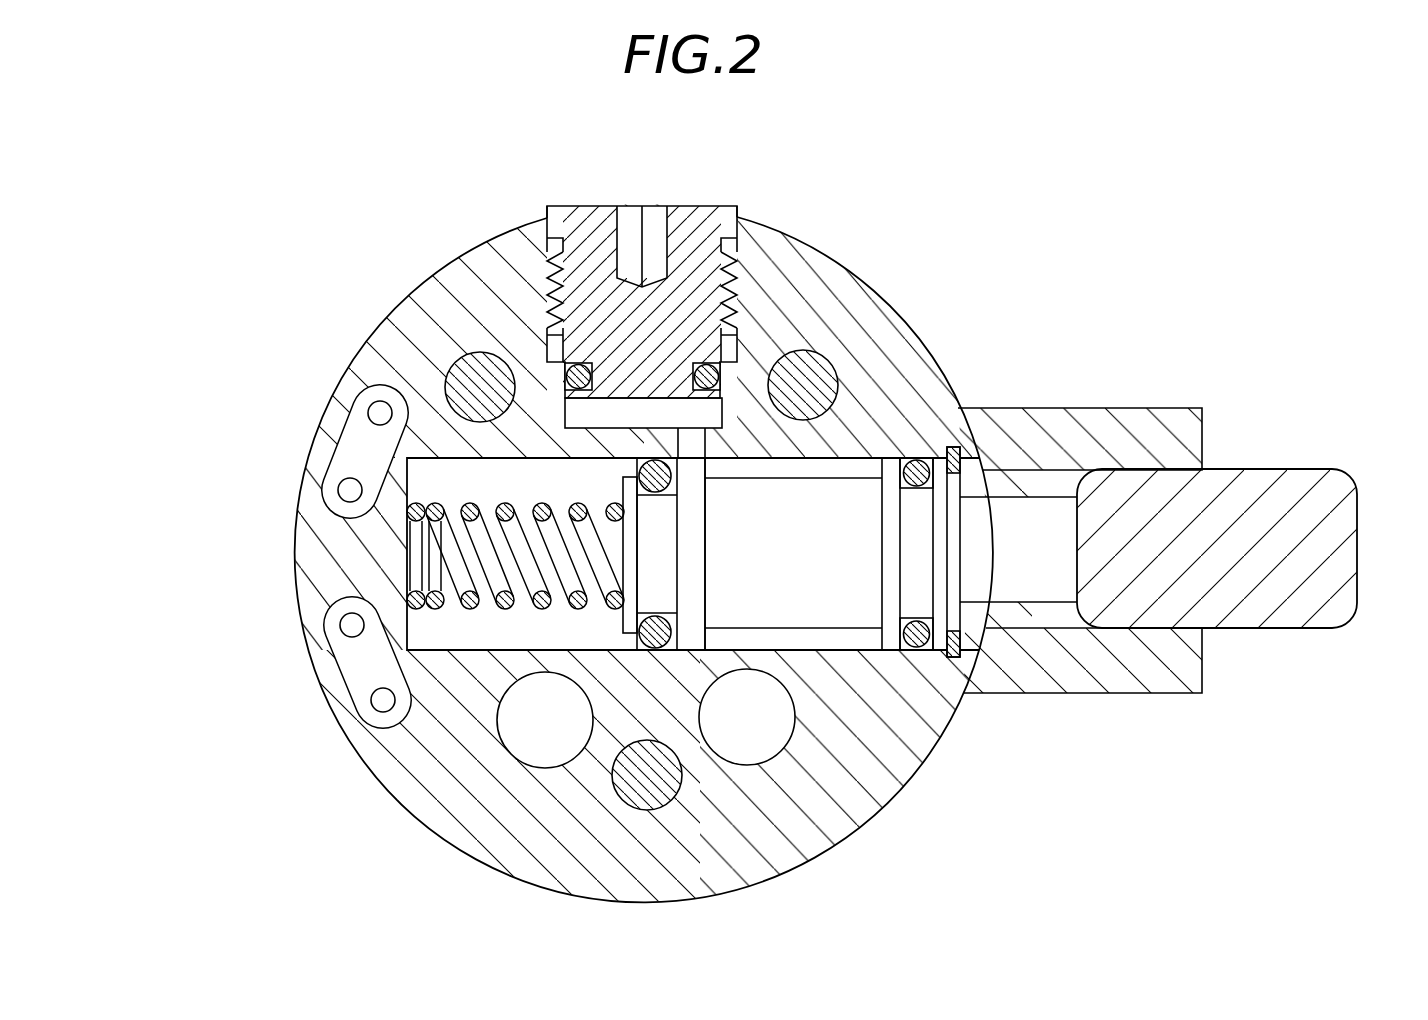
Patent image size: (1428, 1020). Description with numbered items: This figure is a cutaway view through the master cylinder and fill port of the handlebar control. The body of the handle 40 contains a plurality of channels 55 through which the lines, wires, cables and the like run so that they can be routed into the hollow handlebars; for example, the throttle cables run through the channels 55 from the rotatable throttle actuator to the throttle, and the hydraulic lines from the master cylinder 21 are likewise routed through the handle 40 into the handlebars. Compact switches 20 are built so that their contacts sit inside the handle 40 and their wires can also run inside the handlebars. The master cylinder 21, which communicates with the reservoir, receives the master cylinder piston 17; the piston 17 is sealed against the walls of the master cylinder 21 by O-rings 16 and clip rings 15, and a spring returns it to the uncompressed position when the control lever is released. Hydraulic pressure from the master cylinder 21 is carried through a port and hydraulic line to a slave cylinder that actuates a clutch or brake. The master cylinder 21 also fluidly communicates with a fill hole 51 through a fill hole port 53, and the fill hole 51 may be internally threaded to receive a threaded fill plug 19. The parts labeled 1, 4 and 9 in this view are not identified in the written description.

The handle knob 1 is at (1307, 468).
The mounting block 4 is at (1127, 407).
The valve housing 9 is at (863, 283).
The clip rings 15 is at (962, 657).
The O-rings 16 is at (662, 650).
The master cylinder piston 17 is at (1032, 497).
The threaded fill plug 19 is at (693, 208).
The switches 20 is at (323, 445).
The master cylinder 21 is at (472, 652).
The handle 40 is at (375, 180).
The fill hole 51 is at (740, 260).
The fill hole port 53 is at (620, 457).
The channels 55 is at (480, 387).